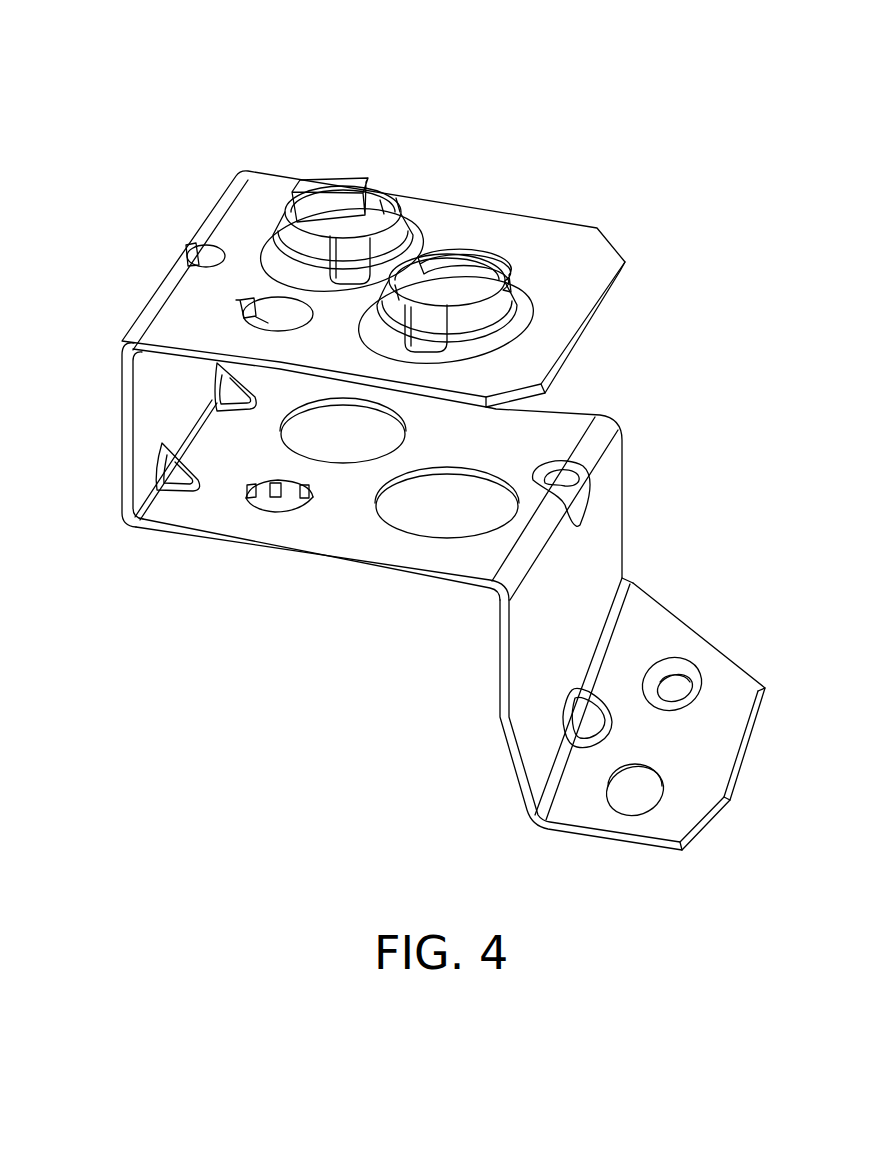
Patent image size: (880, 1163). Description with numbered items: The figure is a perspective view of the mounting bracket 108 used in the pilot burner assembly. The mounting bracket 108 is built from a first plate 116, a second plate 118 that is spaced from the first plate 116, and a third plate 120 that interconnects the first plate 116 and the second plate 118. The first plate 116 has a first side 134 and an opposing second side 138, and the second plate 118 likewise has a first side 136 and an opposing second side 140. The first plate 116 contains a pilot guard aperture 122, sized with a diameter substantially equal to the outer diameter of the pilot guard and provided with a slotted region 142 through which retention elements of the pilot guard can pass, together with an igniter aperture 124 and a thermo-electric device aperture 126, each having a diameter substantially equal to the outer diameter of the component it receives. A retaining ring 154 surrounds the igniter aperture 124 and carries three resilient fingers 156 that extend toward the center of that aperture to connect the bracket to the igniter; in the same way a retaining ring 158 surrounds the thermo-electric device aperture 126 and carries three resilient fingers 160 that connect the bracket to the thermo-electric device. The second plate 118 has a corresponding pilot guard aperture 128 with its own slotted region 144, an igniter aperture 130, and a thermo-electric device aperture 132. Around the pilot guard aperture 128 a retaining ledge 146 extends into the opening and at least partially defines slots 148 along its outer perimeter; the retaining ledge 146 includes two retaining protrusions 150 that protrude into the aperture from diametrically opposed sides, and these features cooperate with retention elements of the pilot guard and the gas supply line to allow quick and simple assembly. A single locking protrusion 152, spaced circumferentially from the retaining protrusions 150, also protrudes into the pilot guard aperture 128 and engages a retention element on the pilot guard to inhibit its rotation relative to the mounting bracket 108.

The mounting bracket 108 is at (382, 432).
The first plate 116 is at (376, 260).
The second plate 118 is at (408, 510).
The third plate 120 is at (120, 413).
The pilot guard aperture 122 is at (190, 322).
The igniter aperture 124 is at (342, 207).
The thermo-electric device aperture 126 is at (507, 249).
The pilot guard aperture 128 is at (266, 559).
The igniter aperture 130 is at (378, 408).
The thermo-electric device aperture 132 is at (433, 539).
The first side 134 is at (513, 232).
The first side 136 is at (545, 418).
The second side 138 is at (612, 288).
The second side 140 is at (460, 583).
The slotted region 142 is at (243, 308).
The slotted region 144 is at (247, 497).
The retaining ledge 146 is at (271, 522).
The slots 148 is at (255, 500).
The retaining protrusions 150 is at (298, 510).
The locking protrusion 152 is at (302, 485).
The retaining ring 154 is at (265, 240).
The resilient fingers 156 is at (333, 190).
The retaining ring 158 is at (514, 330).
The resilient fingers 160 is at (470, 262).